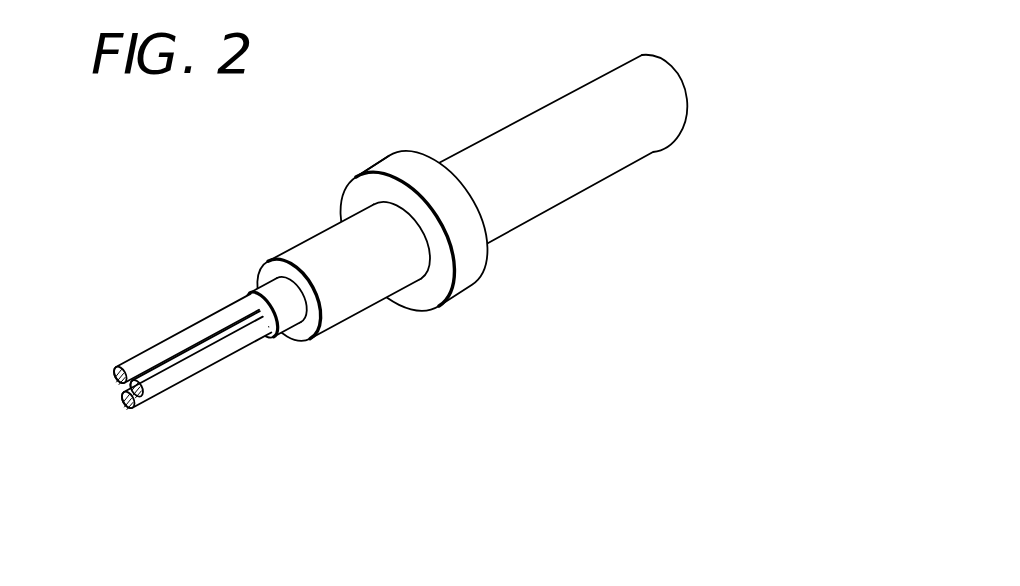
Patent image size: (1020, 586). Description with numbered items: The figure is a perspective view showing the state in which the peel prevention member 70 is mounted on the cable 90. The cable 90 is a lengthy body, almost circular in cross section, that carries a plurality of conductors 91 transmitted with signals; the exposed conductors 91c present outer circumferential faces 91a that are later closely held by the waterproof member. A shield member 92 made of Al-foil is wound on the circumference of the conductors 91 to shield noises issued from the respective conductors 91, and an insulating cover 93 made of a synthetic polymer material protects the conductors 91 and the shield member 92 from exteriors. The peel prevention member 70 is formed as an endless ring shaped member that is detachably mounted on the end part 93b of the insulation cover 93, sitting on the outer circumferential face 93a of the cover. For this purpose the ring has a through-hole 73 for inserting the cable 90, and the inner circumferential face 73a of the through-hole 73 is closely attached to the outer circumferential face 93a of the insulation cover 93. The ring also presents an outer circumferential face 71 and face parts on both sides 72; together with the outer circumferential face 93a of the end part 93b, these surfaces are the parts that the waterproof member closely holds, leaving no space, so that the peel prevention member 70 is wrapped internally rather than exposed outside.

The peel prevention member 70 is at (453, 236).
The outer circumferential face 71 is at (402, 163).
The both sides 72 is at (415, 298).
The through-hole 73 is at (445, 304).
The inner circumferential face 73a is at (354, 178).
The cable 90 is at (567, 135).
The conductors 91 is at (159, 361).
The outer circumferential faces 91a is at (219, 313).
The conductors 91c is at (125, 360).
The shield member 92 is at (293, 322).
The insulating cover 93 is at (318, 300).
The outer circumferential face 93a is at (542, 108).
The end part 93b is at (324, 231).